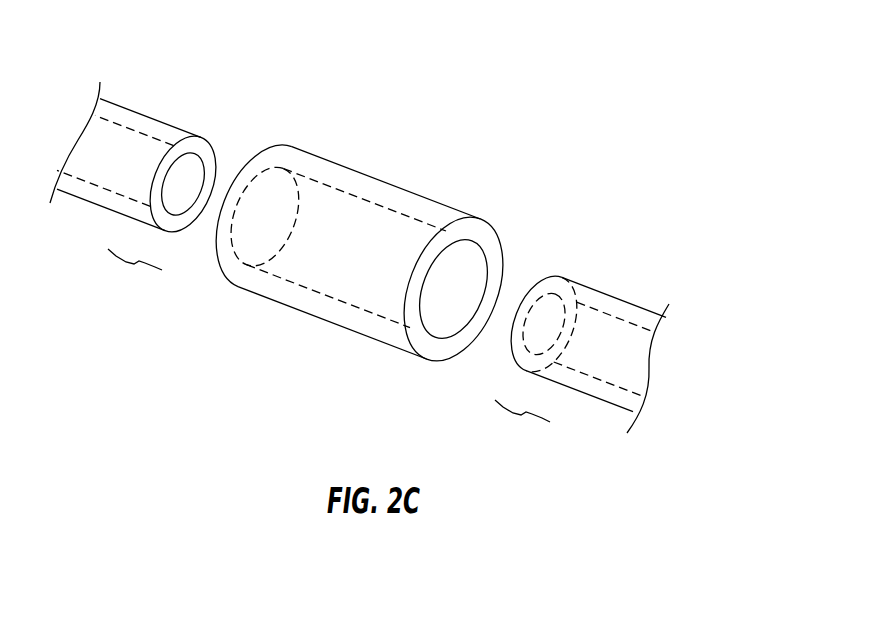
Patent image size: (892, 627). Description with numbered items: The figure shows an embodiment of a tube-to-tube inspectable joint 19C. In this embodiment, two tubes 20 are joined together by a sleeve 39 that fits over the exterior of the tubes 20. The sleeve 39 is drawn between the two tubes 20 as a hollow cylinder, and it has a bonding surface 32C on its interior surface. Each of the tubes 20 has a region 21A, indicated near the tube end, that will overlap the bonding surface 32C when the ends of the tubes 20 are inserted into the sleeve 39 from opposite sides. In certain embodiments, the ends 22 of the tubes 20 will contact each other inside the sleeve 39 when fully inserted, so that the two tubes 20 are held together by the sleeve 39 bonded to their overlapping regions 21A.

The tube-to-tube inspectable joint 19C is at (388, 46).
The tube 20 is at (359, 267).
The region 21A is at (325, 352).
The end 22 is at (198, 142).
The sleeve 39 is at (388, 257).
The bonding surface 32C is at (470, 260).